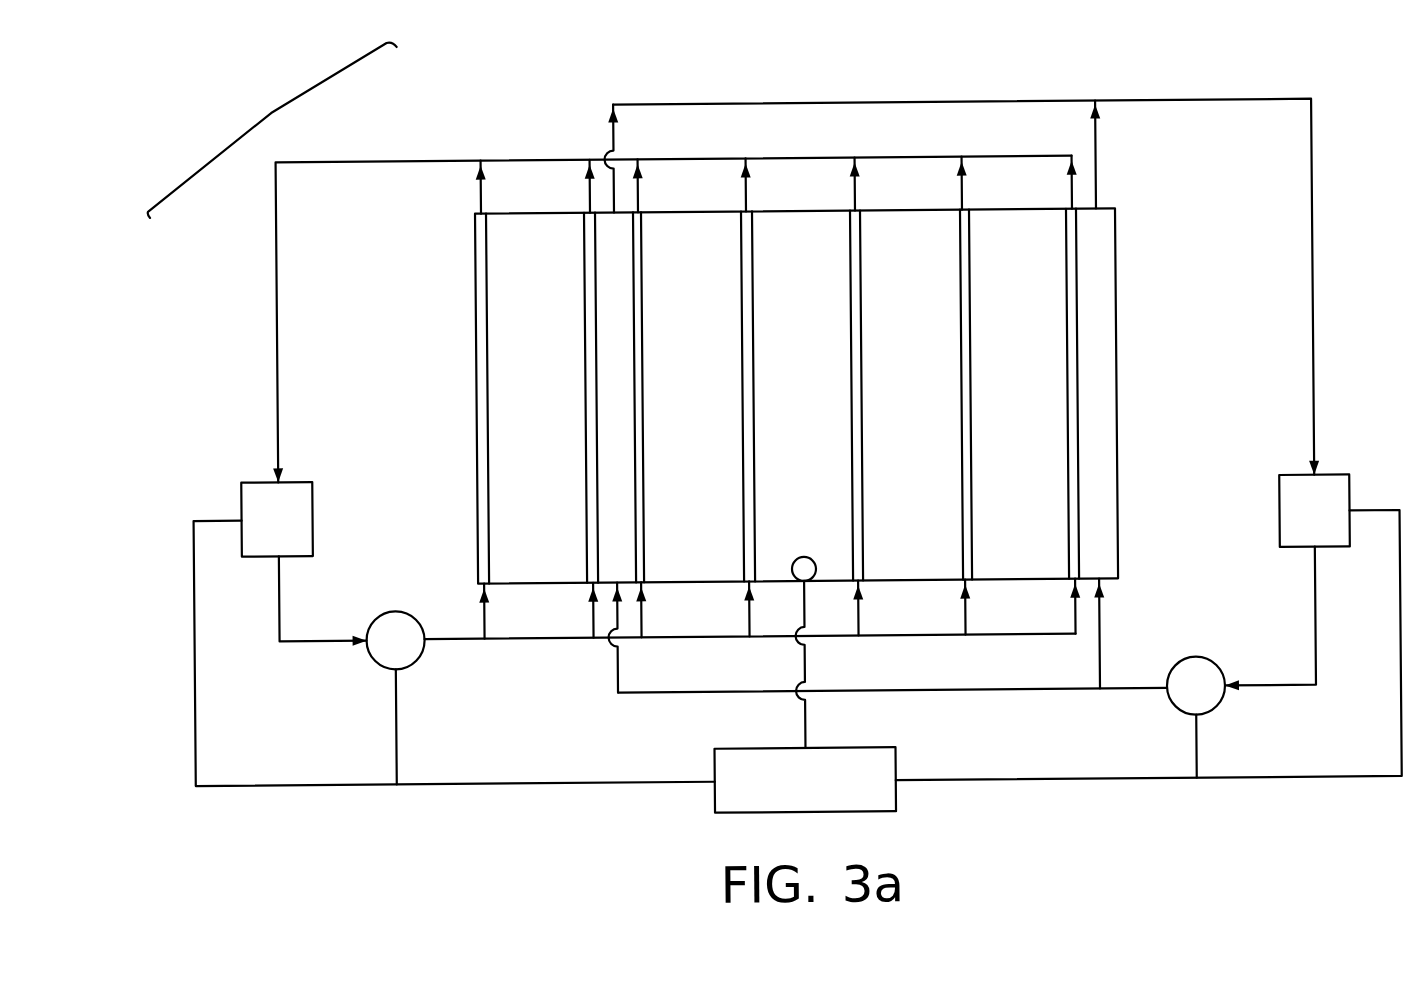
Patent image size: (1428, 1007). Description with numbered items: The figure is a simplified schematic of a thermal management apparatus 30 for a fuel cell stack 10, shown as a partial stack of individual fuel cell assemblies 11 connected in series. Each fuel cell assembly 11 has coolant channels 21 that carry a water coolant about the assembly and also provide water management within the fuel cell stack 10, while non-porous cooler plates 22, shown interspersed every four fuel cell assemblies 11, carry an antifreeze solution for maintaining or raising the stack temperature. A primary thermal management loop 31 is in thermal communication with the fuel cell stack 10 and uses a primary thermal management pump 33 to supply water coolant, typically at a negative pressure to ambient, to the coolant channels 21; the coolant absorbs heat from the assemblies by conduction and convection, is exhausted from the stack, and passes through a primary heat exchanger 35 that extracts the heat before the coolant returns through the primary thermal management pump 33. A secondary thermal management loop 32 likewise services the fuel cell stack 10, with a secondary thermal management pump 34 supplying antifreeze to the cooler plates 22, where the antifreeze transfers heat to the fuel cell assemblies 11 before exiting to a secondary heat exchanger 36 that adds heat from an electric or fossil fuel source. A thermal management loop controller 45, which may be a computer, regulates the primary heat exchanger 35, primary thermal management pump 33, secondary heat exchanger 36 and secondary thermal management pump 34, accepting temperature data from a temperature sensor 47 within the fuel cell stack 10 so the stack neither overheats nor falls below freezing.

The thermal management apparatus 30 is at (274, 109).
The fuel cell stack 10 is at (430, 371).
The fuel cell assembly 11 is at (522, 427).
The coolant channels 21 is at (592, 295).
The cooler plates 22 is at (1099, 332).
The primary thermal management loop 31 is at (279, 268).
The secondary thermal management loop 32 is at (1316, 232).
The primary thermal management pump 33 is at (394, 609).
The secondary thermal management pump 34 is at (1193, 671).
The primary heat exchanger 35 is at (253, 478).
The secondary heat exchanger 36 is at (1295, 498).
The thermal management loop controller 45 is at (747, 763).
The temperature sensor 47 is at (811, 562).